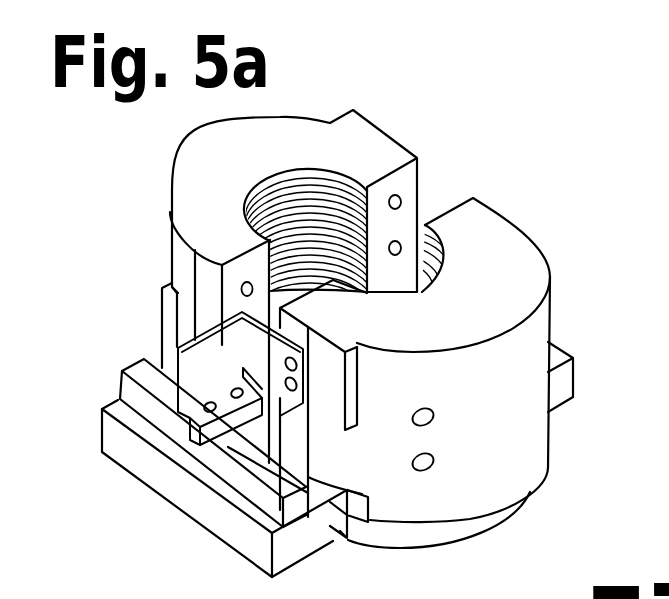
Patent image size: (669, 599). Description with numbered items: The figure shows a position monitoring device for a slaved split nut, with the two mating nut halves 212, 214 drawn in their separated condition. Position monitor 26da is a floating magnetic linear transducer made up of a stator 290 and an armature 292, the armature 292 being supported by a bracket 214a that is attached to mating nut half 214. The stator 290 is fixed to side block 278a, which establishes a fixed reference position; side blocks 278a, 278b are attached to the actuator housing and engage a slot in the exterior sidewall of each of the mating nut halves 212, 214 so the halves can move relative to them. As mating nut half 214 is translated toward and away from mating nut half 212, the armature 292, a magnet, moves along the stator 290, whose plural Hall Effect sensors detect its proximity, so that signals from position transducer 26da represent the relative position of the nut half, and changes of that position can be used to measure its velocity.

The mating nut half 212 is at (259, 160).
The mating nut half 214 is at (486, 312).
The bracket 214a is at (240, 385).
The position monitor 26da is at (126, 324).
The stator 290 is at (147, 380).
The armature 292 is at (226, 448).
The side block 278a is at (296, 540).
The side block 278b is at (551, 382).